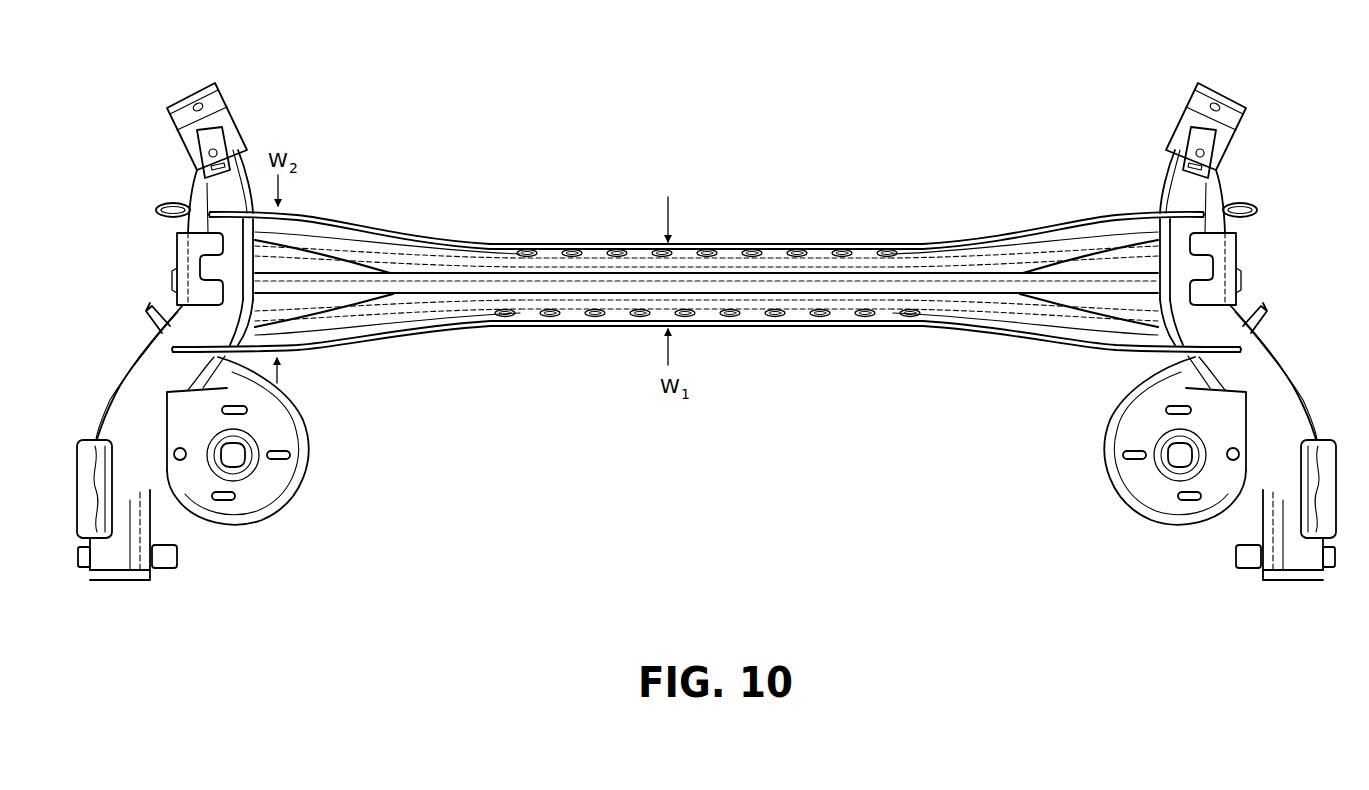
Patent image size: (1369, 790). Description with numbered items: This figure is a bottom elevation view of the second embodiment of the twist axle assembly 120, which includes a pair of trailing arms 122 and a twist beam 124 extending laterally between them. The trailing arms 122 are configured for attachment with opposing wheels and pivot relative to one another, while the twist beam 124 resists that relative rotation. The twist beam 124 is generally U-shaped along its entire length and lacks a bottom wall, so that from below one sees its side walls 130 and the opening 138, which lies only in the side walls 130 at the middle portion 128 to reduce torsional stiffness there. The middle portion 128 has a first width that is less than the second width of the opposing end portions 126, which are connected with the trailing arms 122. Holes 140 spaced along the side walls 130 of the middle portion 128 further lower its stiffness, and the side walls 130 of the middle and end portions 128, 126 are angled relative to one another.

The twist axle assembly 120 is at (650, 162).
The trailing arm 122 is at (218, 114).
The twist beam 124 is at (714, 196).
The end portion 126 is at (315, 208).
The middle portion 128 is at (606, 240).
The side wall 130 is at (863, 252).
The opening 138 is at (717, 285).
The hole 140 is at (800, 253).